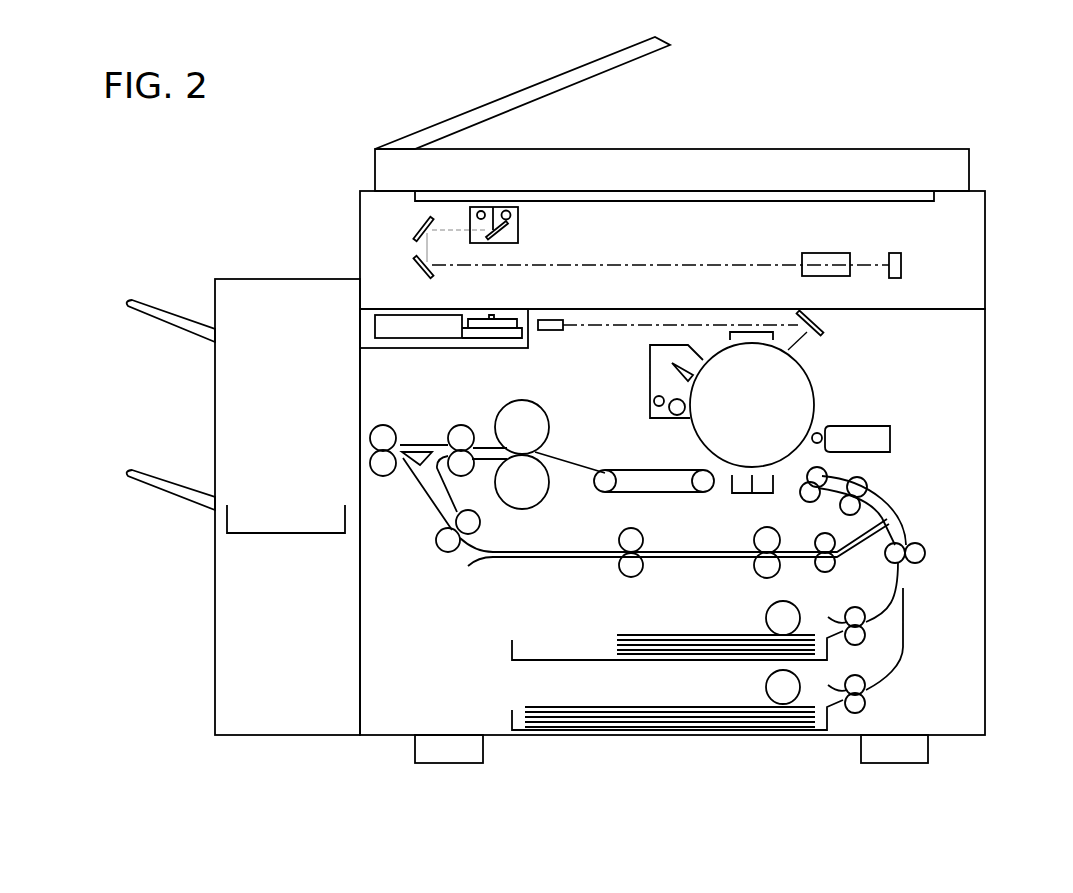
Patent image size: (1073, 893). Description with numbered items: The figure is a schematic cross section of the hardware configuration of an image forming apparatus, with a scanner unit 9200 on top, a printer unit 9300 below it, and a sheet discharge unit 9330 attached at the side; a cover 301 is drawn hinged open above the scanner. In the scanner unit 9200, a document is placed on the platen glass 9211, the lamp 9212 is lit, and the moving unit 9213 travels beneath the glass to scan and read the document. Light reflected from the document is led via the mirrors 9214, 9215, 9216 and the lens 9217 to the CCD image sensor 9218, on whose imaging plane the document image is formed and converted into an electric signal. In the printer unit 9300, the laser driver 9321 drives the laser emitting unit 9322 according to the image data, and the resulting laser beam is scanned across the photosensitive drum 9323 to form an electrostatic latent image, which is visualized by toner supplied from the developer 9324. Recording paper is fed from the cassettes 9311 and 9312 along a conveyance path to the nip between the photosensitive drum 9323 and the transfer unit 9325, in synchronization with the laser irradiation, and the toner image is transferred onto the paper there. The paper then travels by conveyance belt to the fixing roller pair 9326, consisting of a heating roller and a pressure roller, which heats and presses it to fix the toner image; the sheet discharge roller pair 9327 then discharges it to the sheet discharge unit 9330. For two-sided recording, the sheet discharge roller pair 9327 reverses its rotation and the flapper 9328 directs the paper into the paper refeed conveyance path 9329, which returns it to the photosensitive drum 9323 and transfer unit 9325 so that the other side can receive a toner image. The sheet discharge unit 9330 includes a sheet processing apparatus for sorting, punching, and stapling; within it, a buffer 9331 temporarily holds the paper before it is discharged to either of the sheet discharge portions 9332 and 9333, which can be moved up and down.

The platen cover 301 is at (473, 108).
The scanner unit 9200 is at (986, 253).
The platen glass 9211 is at (836, 189).
The lamp 9212 is at (511, 216).
The moving unit 9213 is at (519, 238).
The mirror 9214 is at (490, 240).
The mirror 9215 is at (416, 233).
The mirror 9216 is at (416, 263).
The lens 9217 is at (841, 237).
The CCD image sensor 9218 is at (903, 265).
The printer unit 9300 is at (986, 462).
The cassette 9311 is at (510, 648).
The cassette 9312 is at (510, 718).
The laser driver 9321 is at (375, 330).
The laser emitting unit 9322 is at (475, 297).
The photosensitive drum 9323 is at (812, 375).
The developer 9324 is at (892, 438).
The transfer unit 9325 is at (748, 494).
The fixing roller pair 9326 is at (550, 410).
The sheet discharge roller pair 9327 is at (385, 427).
The flapper 9328 is at (417, 468).
The paper refeed conveyance path 9329 is at (712, 558).
The sheet discharge unit 9330 is at (290, 737).
The buffer 9331 is at (292, 537).
The sheet discharge portion 9332 is at (158, 490).
The sheet discharge portion 9333 is at (158, 322).